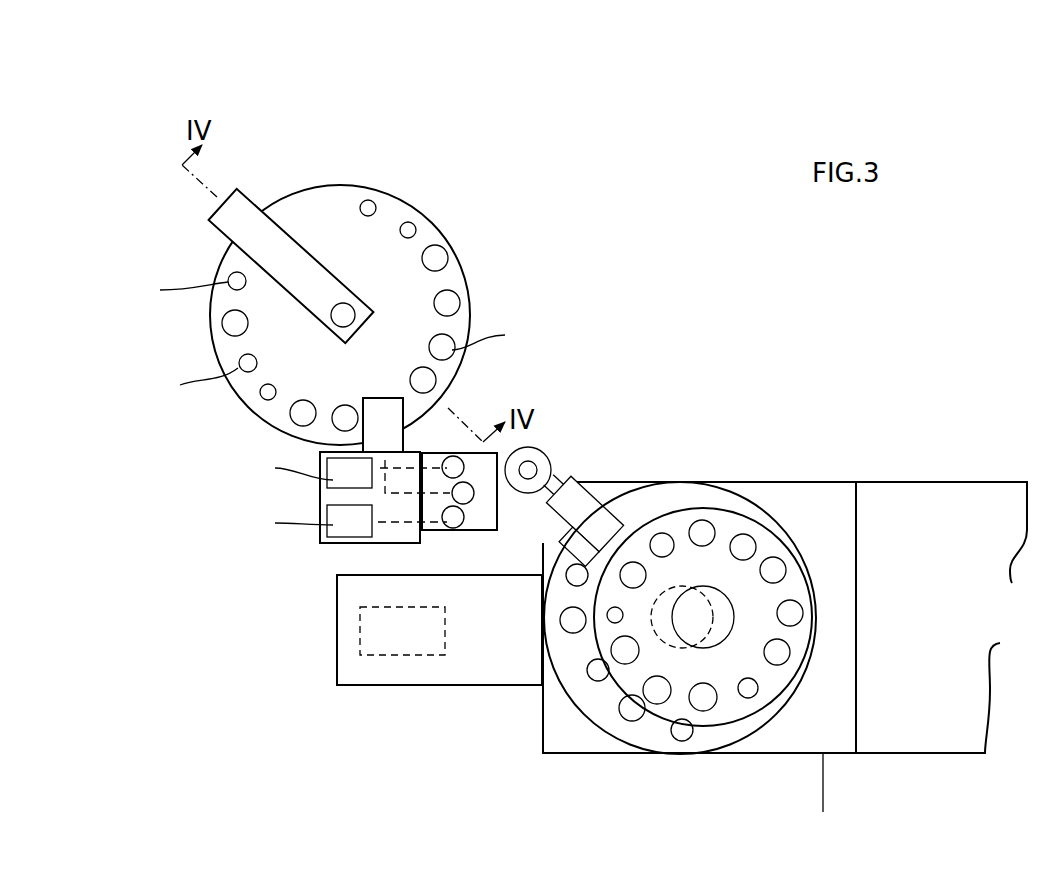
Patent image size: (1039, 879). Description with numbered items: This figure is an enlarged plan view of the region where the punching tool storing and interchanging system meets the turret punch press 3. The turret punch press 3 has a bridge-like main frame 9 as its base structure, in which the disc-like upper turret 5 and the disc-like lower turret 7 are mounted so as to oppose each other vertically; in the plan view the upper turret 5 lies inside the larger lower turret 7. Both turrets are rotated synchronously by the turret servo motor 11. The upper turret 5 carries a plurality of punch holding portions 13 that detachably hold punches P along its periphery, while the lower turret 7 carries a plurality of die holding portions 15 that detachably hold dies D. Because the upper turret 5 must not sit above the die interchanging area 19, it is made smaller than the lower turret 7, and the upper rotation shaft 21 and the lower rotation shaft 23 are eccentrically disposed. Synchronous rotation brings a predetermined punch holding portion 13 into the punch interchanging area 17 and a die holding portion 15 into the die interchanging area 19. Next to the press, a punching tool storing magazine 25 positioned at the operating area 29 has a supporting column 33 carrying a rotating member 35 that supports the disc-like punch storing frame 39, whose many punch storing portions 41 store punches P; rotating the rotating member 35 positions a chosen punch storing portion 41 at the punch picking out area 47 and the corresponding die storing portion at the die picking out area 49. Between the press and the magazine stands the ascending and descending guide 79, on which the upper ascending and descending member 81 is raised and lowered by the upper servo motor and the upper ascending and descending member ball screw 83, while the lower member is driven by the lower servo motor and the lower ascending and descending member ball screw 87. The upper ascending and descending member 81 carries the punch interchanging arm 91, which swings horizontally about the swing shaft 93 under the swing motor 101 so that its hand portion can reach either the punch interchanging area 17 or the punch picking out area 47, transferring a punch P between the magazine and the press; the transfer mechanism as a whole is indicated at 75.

The turret punch press 3 is at (840, 420).
The upper turret 5 is at (757, 528).
The lower turret 7 is at (755, 510).
The main frame 9 is at (410, 688).
The turret servo motor 11 is at (402, 631).
The punch holding portion 13 is at (785, 660).
The die holding portion 15 is at (593, 677).
The punch interchanging area 17 is at (637, 558).
The die interchanging area 19 is at (598, 530).
The upper rotation shaft 21 is at (717, 648).
The lower rotation shaft 23 is at (680, 650).
The punching tool storing magazine 25 is at (210, 336).
The operating area 29 is at (387, 182).
The supporting column 33 is at (298, 253).
The rotating member 35 is at (349, 307).
The punch storing frame 39 is at (462, 236).
The punch storing portion 41 is at (455, 298).
The punch picking out area 47 is at (440, 382).
The die picking out area 49 is at (447, 370).
The transfer device 75 is at (620, 381).
The ascending and descending guide 79 is at (318, 495).
The upper ascending and descending member 81 is at (435, 533).
The upper ascending and descending member ball screw 83 is at (467, 462).
The lower ascending and descending member ball screw 87 is at (463, 513).
The punch interchanging arm 91 is at (577, 497).
The swing shaft 93 is at (535, 463).
The swing motor 101 is at (377, 410).
The punch P is at (808, 640).
The die D is at (575, 690).